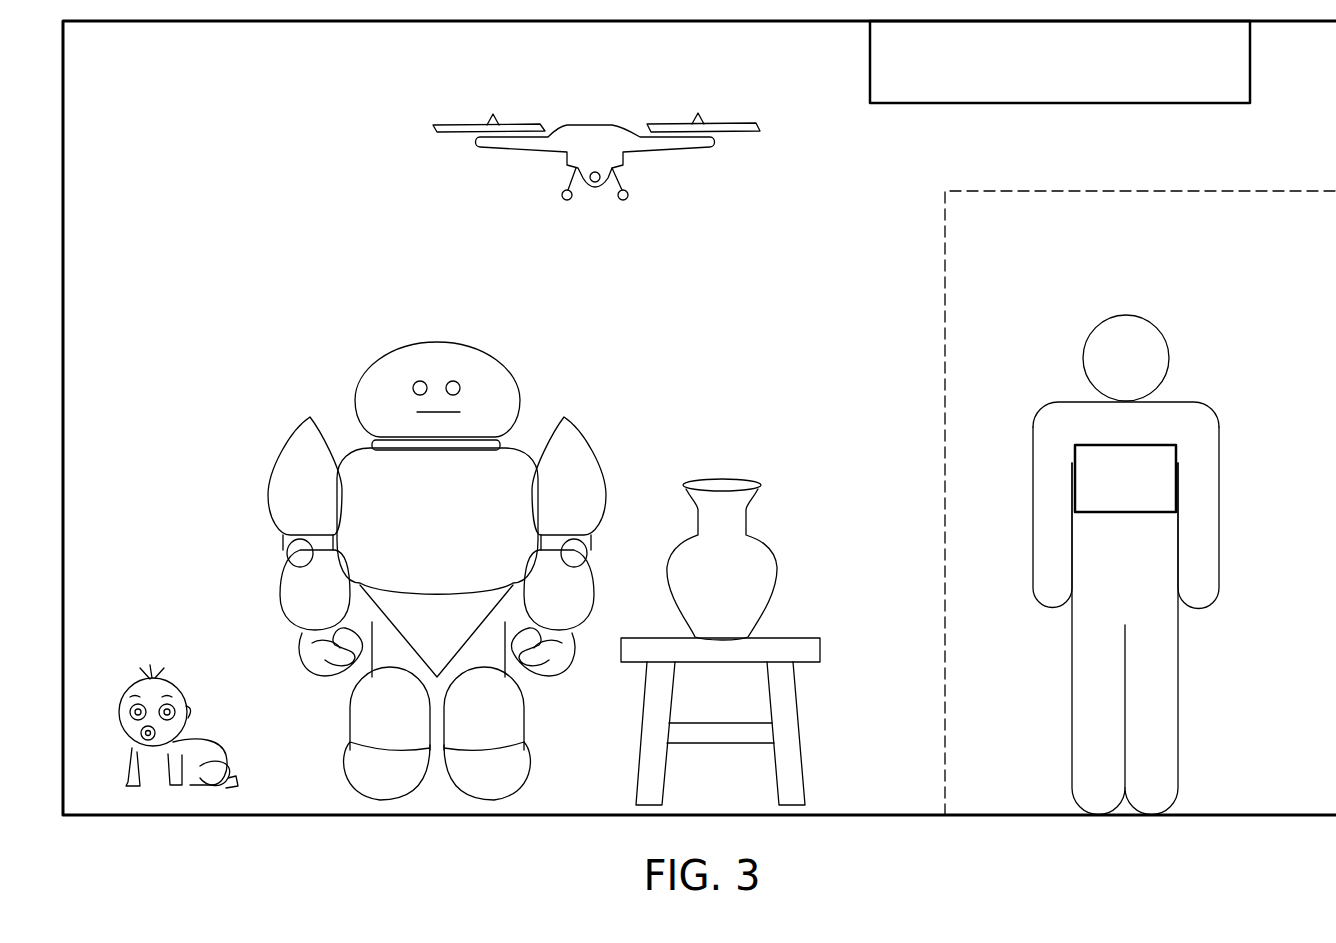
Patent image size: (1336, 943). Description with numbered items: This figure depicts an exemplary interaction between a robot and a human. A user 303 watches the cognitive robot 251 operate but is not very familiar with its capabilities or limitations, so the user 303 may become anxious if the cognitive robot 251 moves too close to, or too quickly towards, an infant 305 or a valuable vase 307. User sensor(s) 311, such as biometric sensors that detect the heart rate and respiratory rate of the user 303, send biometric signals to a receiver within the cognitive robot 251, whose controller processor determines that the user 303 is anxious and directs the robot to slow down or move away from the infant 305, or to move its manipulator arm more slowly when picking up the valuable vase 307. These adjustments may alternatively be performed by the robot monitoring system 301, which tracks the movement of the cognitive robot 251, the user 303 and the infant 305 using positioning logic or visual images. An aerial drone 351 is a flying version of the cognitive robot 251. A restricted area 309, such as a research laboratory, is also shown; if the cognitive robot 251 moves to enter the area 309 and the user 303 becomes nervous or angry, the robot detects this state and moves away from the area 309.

The cognitive robot 251 is at (437, 342).
The robot monitoring system 301 is at (1028, 94).
The user 303 is at (1197, 400).
The infant 305 is at (162, 675).
The valuable vase 307 is at (719, 478).
The area 309 is at (1115, 250).
The user sensor(s) 311 is at (1131, 514).
The aerial drone 351 is at (593, 125).